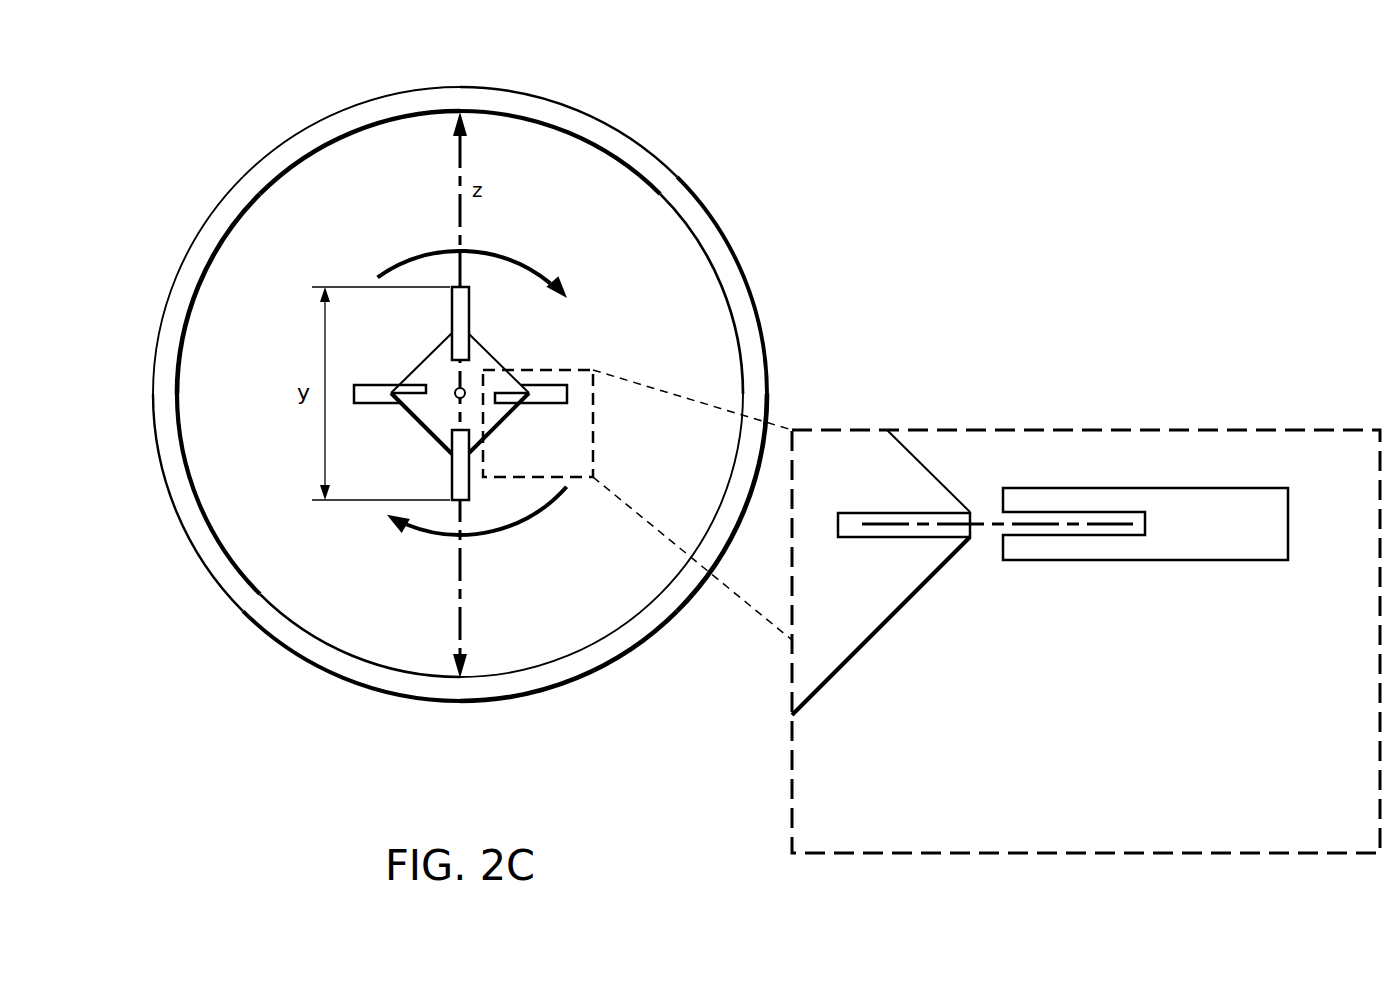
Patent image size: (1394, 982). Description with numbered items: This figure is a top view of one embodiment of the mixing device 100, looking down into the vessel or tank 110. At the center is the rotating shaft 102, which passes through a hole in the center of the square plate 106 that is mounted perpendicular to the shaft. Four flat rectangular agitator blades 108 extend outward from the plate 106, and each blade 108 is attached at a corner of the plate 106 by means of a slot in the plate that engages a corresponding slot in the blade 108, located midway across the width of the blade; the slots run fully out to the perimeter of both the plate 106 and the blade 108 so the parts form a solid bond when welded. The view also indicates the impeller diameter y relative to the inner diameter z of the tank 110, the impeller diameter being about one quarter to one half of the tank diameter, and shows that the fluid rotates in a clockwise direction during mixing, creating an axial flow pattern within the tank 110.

The mixing device 100 is at (856, 94).
The rotating shaft 102 is at (455, 388).
The plate 106 is at (485, 358).
The agitator blades 108 is at (375, 397).
The tank 110 is at (363, 112).